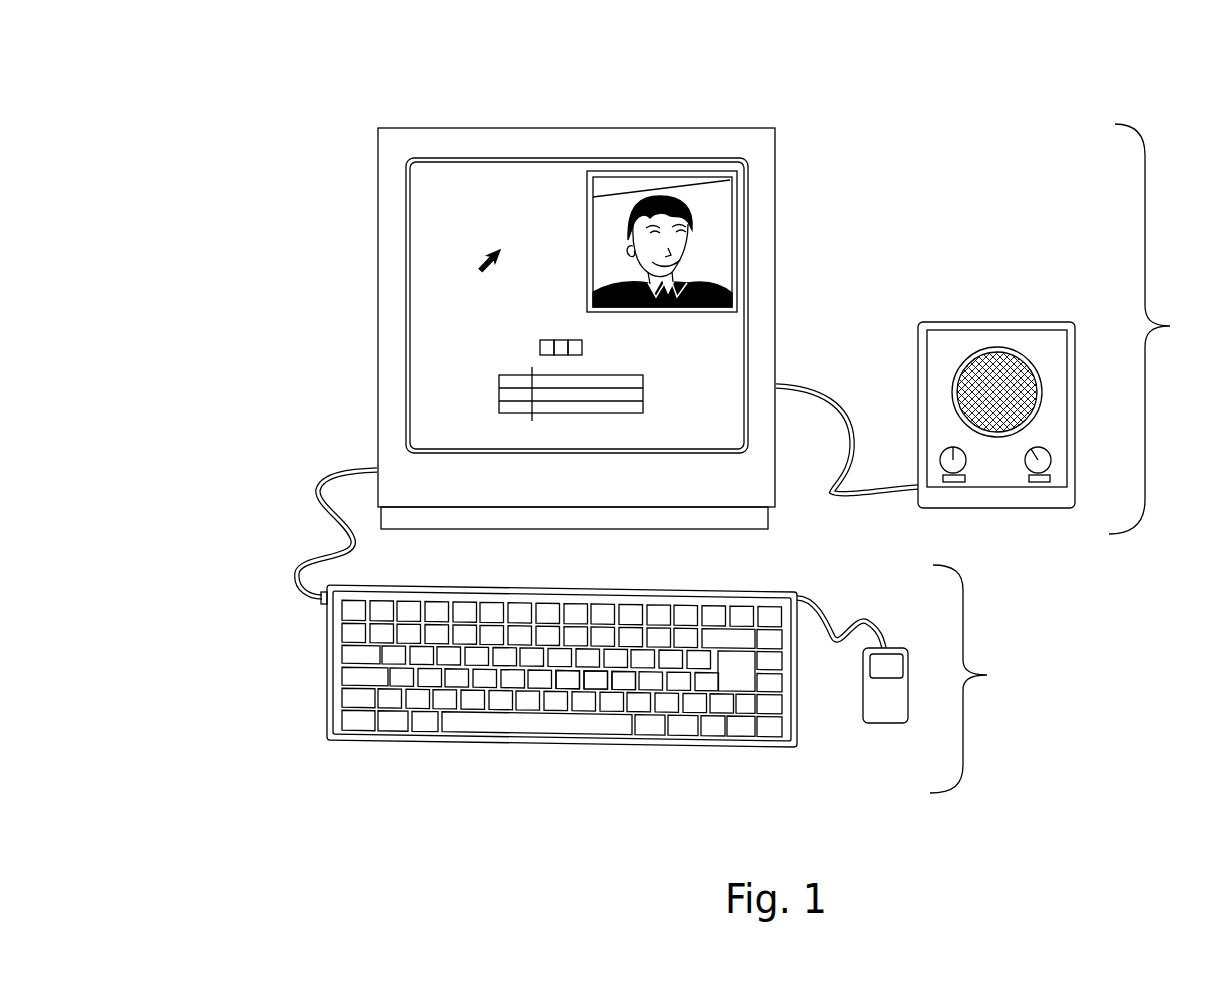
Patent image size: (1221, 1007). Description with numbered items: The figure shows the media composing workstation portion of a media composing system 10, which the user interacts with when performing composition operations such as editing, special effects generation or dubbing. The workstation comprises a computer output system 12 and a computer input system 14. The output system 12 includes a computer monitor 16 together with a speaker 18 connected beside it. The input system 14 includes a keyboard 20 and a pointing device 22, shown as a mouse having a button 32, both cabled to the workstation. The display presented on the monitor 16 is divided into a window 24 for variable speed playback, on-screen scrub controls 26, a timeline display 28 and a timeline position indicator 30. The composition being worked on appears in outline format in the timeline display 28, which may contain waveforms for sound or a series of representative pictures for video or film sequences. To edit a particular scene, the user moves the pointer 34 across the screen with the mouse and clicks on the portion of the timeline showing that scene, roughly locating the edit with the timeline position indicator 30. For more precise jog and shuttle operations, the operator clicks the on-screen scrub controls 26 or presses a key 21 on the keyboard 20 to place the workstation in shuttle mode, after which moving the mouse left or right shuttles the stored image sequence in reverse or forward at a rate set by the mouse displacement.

The system 10 is at (990, 90).
The computer output system 12 is at (1157, 329).
The computer input system 14 is at (976, 679).
The computer monitor 16 is at (491, 122).
The speaker 18 is at (966, 322).
The keyboard 20 is at (330, 740).
The key 21 is at (578, 688).
The pointing device 22 is at (862, 730).
The window 24 is at (663, 171).
The on-screen scrub controls 26 is at (583, 345).
The timeline display 28 is at (480, 397).
The timeline position indicator 30 is at (530, 395).
The button 32 is at (903, 666).
The pointer 34 is at (477, 265).